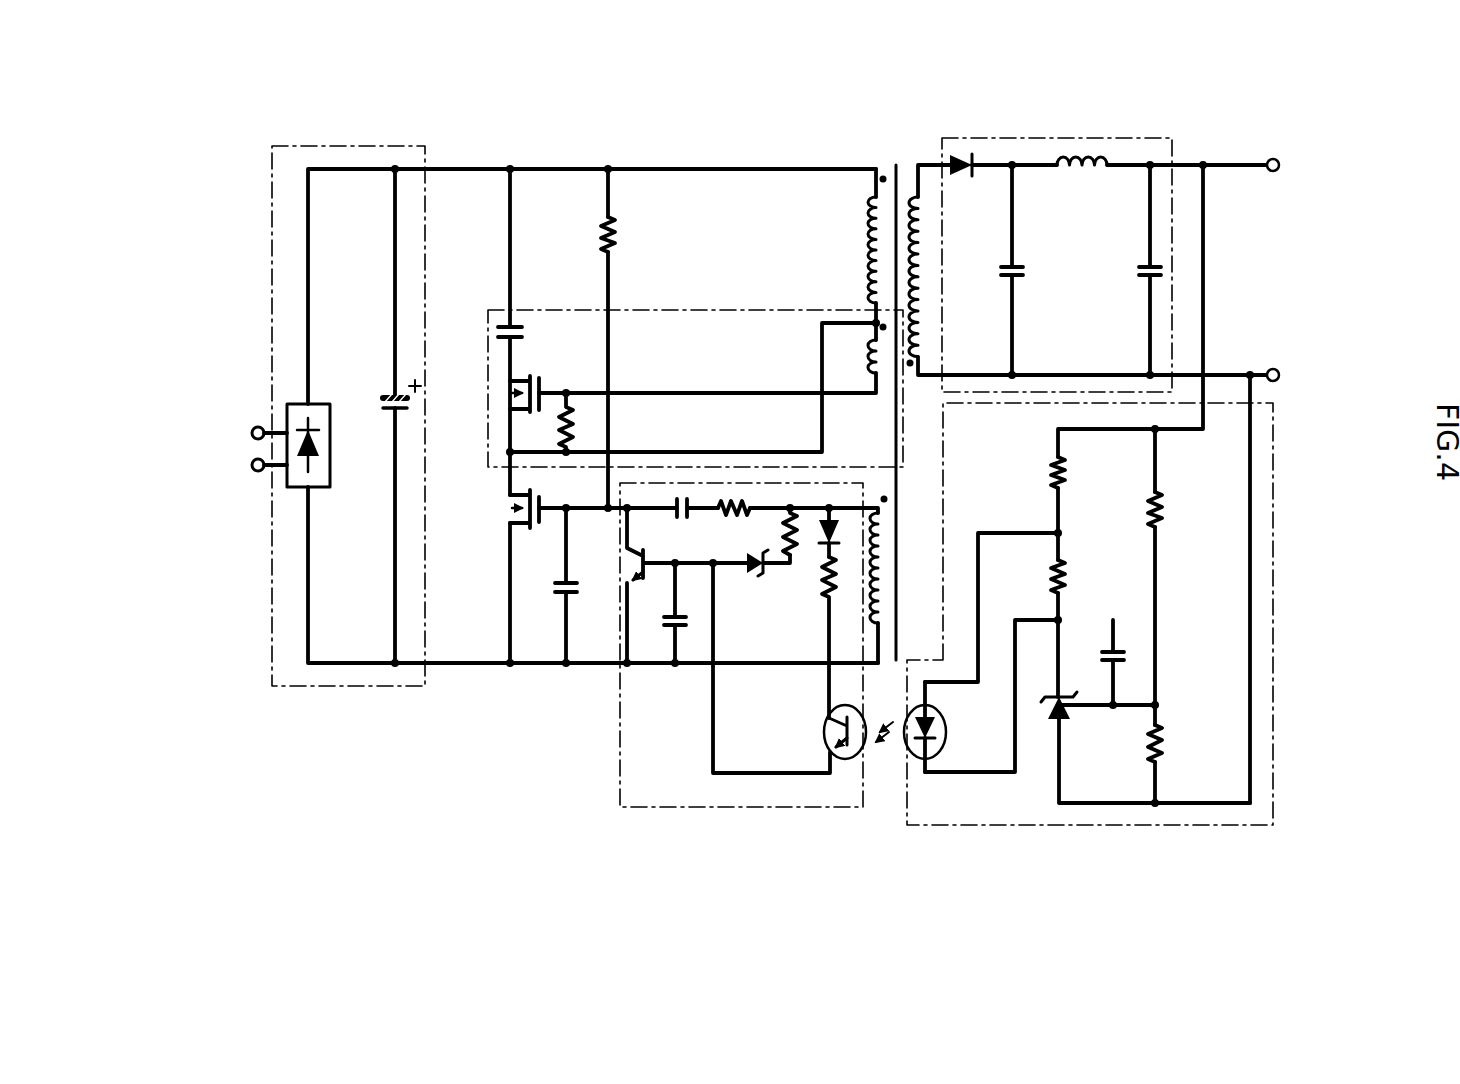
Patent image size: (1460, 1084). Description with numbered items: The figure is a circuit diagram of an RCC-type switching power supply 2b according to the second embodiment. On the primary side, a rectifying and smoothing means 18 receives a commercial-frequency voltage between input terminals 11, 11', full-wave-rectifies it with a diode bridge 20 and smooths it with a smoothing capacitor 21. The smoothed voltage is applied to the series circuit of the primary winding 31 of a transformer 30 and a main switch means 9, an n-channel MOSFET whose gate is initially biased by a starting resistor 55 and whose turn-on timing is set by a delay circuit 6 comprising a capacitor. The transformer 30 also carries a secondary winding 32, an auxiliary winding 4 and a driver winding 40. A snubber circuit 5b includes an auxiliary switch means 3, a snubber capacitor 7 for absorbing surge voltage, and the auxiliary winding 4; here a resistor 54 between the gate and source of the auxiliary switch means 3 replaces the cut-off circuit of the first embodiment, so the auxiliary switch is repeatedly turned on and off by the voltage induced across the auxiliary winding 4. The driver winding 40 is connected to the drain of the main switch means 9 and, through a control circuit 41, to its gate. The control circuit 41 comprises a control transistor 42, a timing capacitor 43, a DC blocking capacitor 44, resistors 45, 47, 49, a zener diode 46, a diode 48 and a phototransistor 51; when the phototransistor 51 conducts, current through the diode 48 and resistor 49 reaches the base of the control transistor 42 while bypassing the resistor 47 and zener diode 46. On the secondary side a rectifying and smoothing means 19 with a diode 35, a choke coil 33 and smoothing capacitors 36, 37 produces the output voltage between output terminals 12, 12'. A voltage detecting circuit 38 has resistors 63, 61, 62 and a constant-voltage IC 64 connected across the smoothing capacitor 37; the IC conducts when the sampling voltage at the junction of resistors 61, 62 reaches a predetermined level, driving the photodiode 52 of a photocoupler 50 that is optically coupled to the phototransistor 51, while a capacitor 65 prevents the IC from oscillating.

The RCC-type switching power supply 2b is at (262, 73).
The rectifying and smoothing means 18 is at (395, 148).
The input terminal 11 is at (234, 403).
The input terminal 11' is at (221, 492).
The diode bridge 20 is at (292, 488).
The smoothing capacitor 21 is at (394, 412).
The snubber circuit 5b is at (686, 308).
The auxiliary switch means 3 is at (506, 396).
The snubber capacitor 7 is at (524, 334).
The resistor 54 is at (576, 428).
The starting resistor 55 is at (613, 235).
The main switch means 9 is at (505, 510).
The delay circuit 6 is at (556, 588).
The transformer 30 is at (898, 160).
The primary winding 31 is at (866, 236).
The auxiliary winding 4 is at (866, 358).
The driver winding 40 is at (877, 598).
The secondary winding 32 is at (930, 252).
The rectifying and smoothing means 19 is at (1172, 138).
The diode 35 is at (960, 155).
The choke coil 33 is at (1083, 155).
The smoothing capacitor 36 is at (1000, 272).
The smoothing capacitor 37 is at (1135, 272).
The output terminal 12 is at (1309, 165).
The output terminal 12' is at (1313, 374).
The control circuit 41 is at (618, 742).
The control transistor 42 is at (644, 590).
The timing capacitor 43 is at (692, 622).
The DC blocking capacitor 44 is at (684, 525).
The resistor 45 is at (732, 514).
The zener diode 46 is at (755, 575).
The resistor 47 is at (800, 557).
The diode 48 is at (840, 533).
The resistor 49 is at (842, 592).
The photocoupler 50 is at (937, 872).
The phototransistor 51 is at (853, 760).
The photodiode 52 is at (932, 760).
The voltage detecting circuit 38 is at (1197, 827).
The resistor 63 is at (1068, 468).
The resistor 61 is at (1165, 505).
The variable-output constant-voltage IC 64 is at (1068, 558).
The capacitor 65 is at (1128, 655).
The resistor 62 is at (1165, 738).